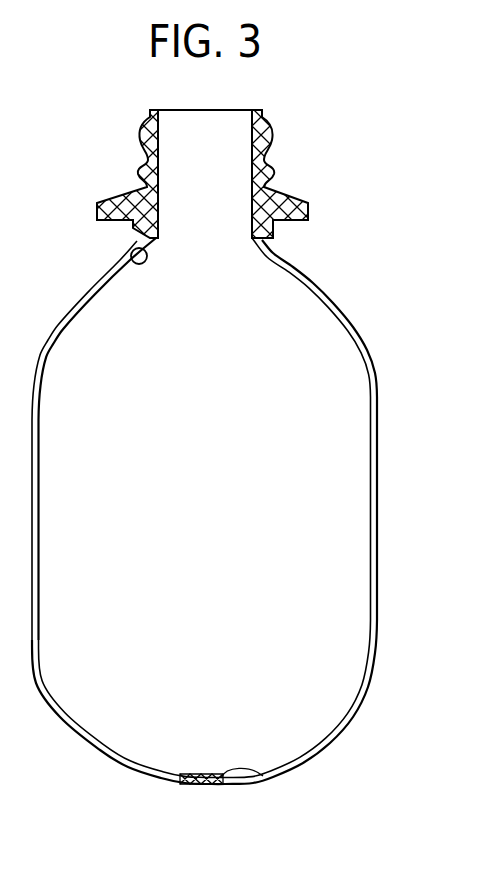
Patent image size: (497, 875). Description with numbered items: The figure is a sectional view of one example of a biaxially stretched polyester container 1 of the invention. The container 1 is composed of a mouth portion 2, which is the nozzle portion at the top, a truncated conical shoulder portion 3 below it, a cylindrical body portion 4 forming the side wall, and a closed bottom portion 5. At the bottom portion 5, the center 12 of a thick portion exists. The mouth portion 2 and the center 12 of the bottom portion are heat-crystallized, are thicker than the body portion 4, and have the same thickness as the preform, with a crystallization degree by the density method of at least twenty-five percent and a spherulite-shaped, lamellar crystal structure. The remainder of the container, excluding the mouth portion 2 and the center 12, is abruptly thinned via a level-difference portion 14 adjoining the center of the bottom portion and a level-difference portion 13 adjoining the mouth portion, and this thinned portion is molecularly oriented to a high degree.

The biaxially stretched polyester container 1 is at (231, 469).
The mouth portion 2 is at (143, 160).
The truncated conical shoulder portion 3 is at (310, 275).
The cylindrical body portion 4 is at (378, 500).
The closed bottom portion 5 is at (152, 783).
The center of the bottom portion 12 is at (208, 785).
The level-difference portion adjoining the mouth portion 13 is at (130, 263).
The level-difference portion adjoining the center of the bottom portion 14 is at (272, 778).